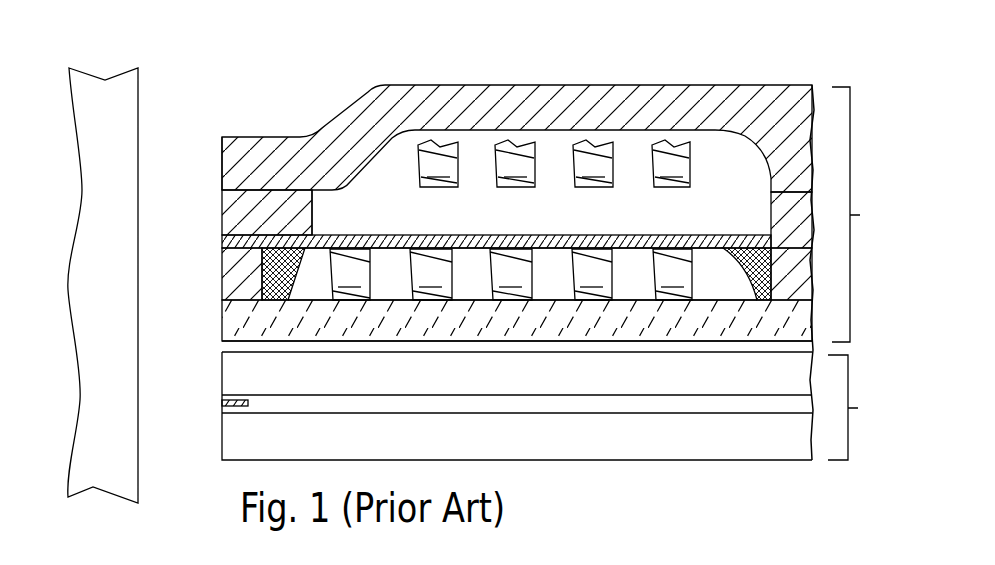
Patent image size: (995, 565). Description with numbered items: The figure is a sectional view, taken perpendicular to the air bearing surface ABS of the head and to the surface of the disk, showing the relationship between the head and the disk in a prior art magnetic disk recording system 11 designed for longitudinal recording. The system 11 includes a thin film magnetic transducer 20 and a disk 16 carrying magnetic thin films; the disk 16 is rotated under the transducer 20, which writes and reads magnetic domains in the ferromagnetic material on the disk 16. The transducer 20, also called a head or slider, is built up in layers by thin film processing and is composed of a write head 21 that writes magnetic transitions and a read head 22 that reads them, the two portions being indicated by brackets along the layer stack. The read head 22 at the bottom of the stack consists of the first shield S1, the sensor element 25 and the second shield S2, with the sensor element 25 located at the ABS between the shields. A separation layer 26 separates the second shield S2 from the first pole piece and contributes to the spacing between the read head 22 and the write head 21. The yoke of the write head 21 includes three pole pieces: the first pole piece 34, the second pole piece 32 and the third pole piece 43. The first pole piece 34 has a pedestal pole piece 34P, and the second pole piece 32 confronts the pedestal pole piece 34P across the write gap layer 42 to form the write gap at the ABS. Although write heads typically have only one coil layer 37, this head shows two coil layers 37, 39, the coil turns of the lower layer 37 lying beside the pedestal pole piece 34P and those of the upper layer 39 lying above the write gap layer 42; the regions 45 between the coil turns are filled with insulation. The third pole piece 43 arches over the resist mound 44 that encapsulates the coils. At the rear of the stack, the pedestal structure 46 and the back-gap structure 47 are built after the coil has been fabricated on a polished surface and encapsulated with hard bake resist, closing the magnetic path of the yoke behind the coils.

The magnetic disk recording system 11 is at (750, 46).
The disk 16 is at (112, 93).
The thin film magnetic transducer 20 is at (308, 98).
The write head 21 is at (860, 214).
The read head 22 is at (857, 407).
The sensor element 25 is at (223, 402).
The separation layer 26 is at (230, 346).
The P2 pole piece 32 is at (229, 209).
The P1 pole piece 34 is at (230, 307).
The pedestal pole piece 34P is at (230, 279).
The coil layer 37 is at (511, 274).
The coil layer 39 is at (554, 163).
The write gap layer 42 is at (548, 236).
The P3 pole piece 43 is at (546, 93).
The resist mound 44 is at (401, 219).
The insulation between coils 45 is at (707, 258).
The pedestal structure 46 is at (775, 208).
The back-gap structure 47 is at (812, 285).
The air bearing surface ABS is at (220, 156).
The first shield S1 is at (540, 449).
The second shield S2 is at (540, 389).